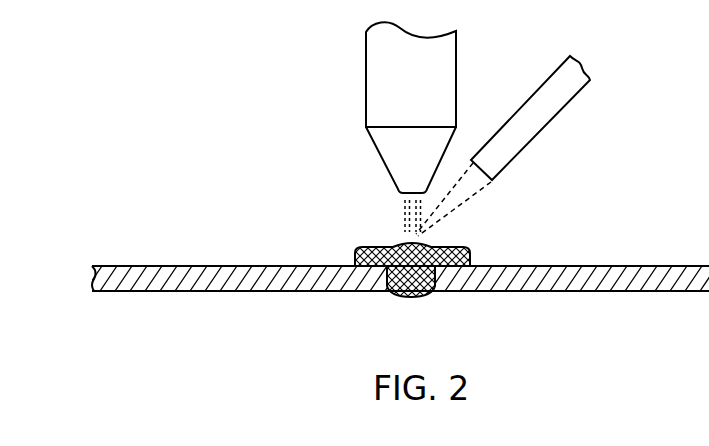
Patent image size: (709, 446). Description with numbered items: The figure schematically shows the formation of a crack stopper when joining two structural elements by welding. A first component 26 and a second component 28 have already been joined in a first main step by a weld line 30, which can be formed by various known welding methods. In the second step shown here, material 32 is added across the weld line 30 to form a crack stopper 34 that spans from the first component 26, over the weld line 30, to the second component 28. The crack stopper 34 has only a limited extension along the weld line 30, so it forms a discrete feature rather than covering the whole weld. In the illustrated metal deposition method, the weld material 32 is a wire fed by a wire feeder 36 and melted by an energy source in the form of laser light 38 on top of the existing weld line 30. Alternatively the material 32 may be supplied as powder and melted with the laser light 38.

The first component 26 is at (203, 270).
The second component 28 is at (597, 270).
The weld line 30 is at (410, 292).
The material 32 is at (465, 192).
The crack stopper 34 is at (355, 257).
The wire feeder 36 is at (533, 122).
The laser light 38 is at (382, 75).